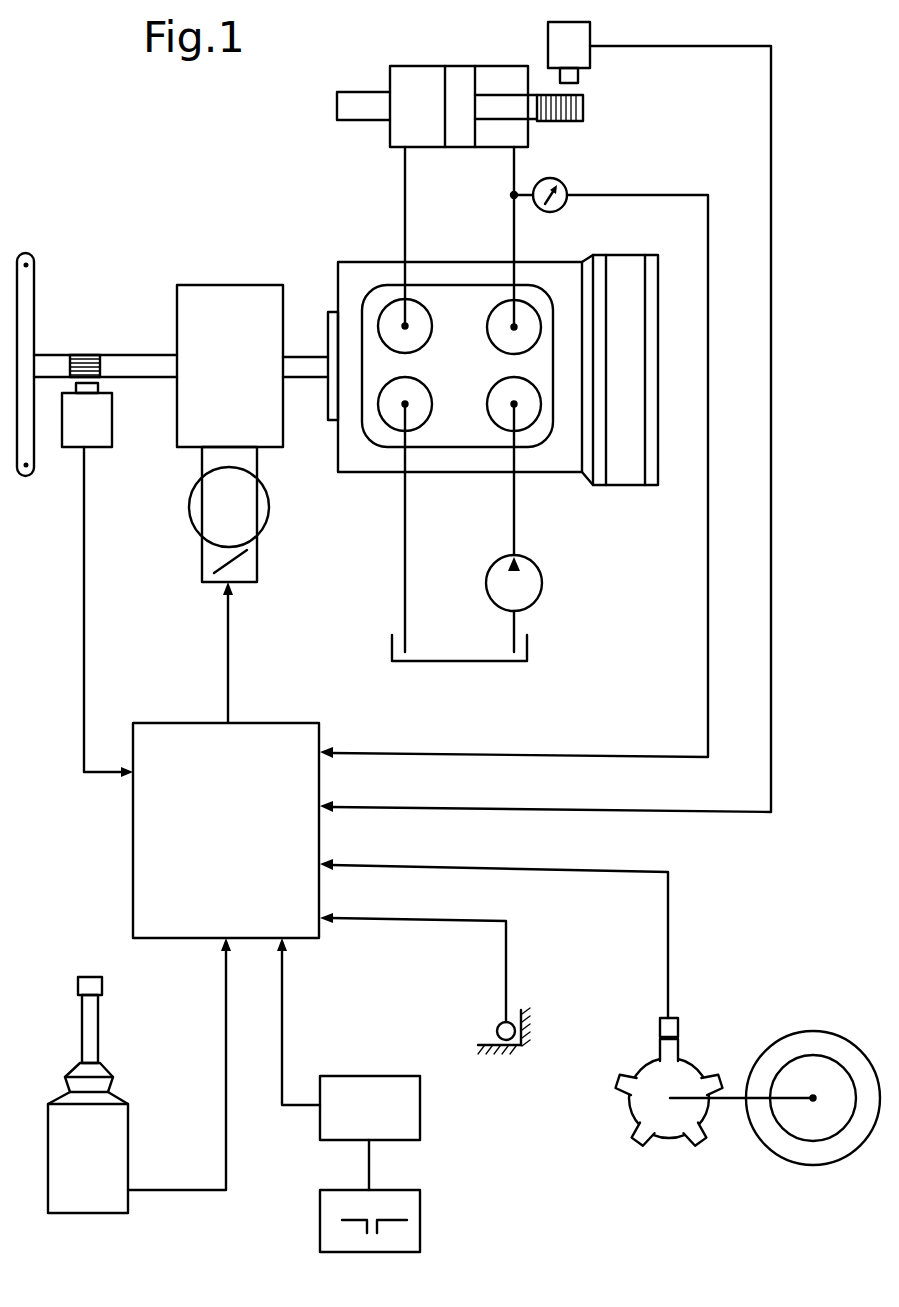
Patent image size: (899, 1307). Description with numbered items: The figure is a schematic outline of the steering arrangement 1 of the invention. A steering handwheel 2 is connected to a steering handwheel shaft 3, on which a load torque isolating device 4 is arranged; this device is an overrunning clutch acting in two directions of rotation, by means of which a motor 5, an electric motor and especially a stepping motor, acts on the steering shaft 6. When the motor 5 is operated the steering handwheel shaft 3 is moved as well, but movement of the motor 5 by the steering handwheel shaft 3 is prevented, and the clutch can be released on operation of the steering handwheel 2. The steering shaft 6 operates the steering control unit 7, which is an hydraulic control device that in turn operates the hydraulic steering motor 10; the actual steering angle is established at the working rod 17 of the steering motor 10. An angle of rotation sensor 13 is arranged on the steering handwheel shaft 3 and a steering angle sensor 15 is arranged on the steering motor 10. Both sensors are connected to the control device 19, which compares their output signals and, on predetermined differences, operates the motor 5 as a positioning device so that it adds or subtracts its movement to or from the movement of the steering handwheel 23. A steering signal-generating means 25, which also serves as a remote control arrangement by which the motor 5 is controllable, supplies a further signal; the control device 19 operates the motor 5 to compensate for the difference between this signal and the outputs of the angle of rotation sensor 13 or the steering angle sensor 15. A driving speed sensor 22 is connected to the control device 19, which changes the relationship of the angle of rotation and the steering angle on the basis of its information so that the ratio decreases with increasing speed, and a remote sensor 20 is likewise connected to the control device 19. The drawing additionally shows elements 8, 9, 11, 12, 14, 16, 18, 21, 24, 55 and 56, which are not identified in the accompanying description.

The steering arrangement 1 is at (96, 168).
The steering handwheel 2 is at (20, 480).
The steering handwheel shaft 3 is at (51, 366).
The load torque isolating device 4 is at (205, 303).
The motor 5 is at (207, 525).
The steering shaft 6 is at (303, 363).
The steering control unit 7 is at (372, 476).
The pump 8 is at (537, 583).
The tank 9 is at (475, 662).
The steering motor 10 is at (388, 150).
The cylinder chamber 11 is at (422, 138).
The cylinder chamber 12 is at (493, 138).
The angle of rotation sensor 13 is at (103, 580).
The coupling 14 is at (88, 366).
The steering angle sensor 15 is at (558, 48).
The threaded rod 16 is at (575, 118).
The working rod 17 is at (350, 107).
The pressure gauge 18 is at (565, 207).
The control device 19 is at (302, 918).
The remote sensor 20 is at (503, 1045).
The fixed support 21 is at (524, 1022).
The driving speed sensor 22 is at (673, 1023).
The steering handwheel 23 is at (812, 1038).
The toothed gear 24 is at (652, 1115).
The steering signal-generating means 25 is at (115, 1160).
The switch 55 is at (328, 1217).
The signal unit 56 is at (375, 1088).